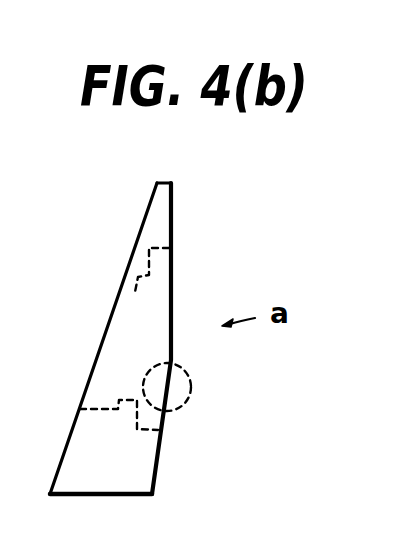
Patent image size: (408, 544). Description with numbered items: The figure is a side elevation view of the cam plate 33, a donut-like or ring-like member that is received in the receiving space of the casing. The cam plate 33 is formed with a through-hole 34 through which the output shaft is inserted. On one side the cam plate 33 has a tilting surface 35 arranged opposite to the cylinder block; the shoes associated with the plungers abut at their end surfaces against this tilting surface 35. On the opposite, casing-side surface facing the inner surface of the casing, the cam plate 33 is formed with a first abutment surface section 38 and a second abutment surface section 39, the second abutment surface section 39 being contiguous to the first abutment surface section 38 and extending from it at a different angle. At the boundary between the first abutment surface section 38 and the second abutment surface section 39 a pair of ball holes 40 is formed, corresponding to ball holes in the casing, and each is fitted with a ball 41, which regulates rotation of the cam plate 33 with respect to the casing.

The cam plate 33 is at (201, 209).
The through-hole 34 is at (123, 296).
The tilting surface 35 is at (139, 230).
The first abutment surface section 38 is at (172, 295).
The second abutment surface section 39 is at (154, 483).
The ball holes 40 is at (140, 377).
The ball 41 is at (178, 389).